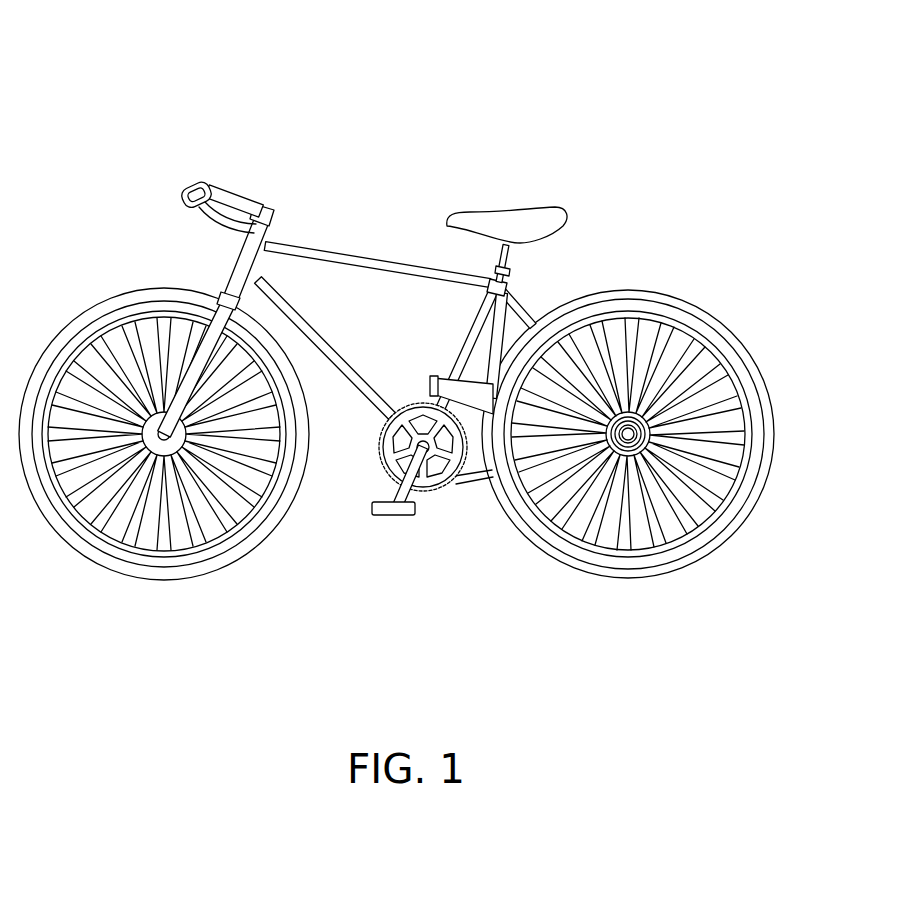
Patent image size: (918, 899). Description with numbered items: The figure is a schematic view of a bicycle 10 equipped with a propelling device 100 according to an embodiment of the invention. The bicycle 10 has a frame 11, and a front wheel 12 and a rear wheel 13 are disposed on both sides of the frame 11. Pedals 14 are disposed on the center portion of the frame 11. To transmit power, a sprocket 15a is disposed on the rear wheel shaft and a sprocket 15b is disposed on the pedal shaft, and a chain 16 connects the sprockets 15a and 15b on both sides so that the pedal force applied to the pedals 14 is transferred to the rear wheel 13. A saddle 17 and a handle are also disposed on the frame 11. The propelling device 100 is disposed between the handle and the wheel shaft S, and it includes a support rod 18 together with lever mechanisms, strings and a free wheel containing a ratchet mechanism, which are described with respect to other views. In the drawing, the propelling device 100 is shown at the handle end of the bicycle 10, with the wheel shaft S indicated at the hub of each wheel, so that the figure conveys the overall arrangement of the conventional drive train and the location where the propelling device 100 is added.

The bicycle 10 is at (116, 38).
The frame 11 is at (338, 253).
The front wheel 12 is at (85, 548).
The rear wheel 13 is at (660, 290).
The pedals 14 is at (413, 514).
The sprocket 15a is at (630, 446).
The sprocket 15b is at (386, 497).
The chain 16 is at (460, 483).
The saddle 17 is at (517, 212).
The support rod 18 is at (183, 199).
The propelling device 100 is at (192, 178).
The wheel shaft S is at (120, 300).